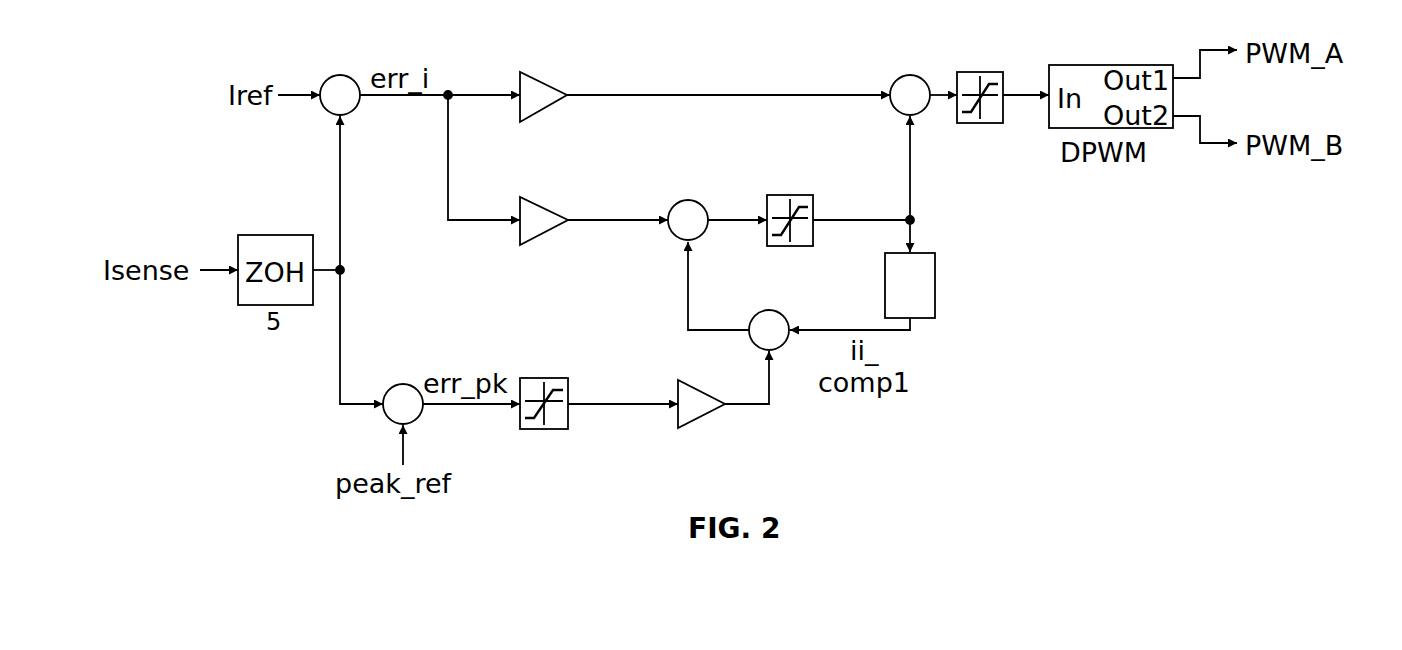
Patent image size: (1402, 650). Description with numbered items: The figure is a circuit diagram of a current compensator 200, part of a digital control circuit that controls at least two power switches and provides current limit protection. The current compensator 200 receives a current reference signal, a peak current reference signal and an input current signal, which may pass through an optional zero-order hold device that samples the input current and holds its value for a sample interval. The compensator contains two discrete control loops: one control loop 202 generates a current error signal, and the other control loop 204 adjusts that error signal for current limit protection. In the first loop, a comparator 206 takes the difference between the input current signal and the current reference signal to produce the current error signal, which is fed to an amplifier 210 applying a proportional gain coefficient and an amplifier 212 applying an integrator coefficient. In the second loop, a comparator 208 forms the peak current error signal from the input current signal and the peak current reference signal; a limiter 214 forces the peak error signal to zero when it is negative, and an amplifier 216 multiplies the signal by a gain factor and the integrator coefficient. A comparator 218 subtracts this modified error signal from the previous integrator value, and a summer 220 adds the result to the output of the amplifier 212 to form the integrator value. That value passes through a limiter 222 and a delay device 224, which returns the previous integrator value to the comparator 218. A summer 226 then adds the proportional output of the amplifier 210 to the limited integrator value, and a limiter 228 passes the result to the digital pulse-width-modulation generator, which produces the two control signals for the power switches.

The current compensator 200 is at (1052, 33).
The control loop 202 is at (610, 153).
The control loop 204 is at (457, 311).
The comparator 206 is at (335, 76).
The comparator 208 is at (405, 385).
The amplifier 210 is at (526, 72).
The amplifier 212 is at (531, 197).
The limiter 214 is at (555, 378).
The amplifier 216 is at (686, 380).
The comparator 218 is at (762, 312).
The summer 220 is at (676, 206).
The limiter 222 is at (813, 226).
The delay device 224 is at (935, 272).
The summer 226 is at (900, 76).
The limiter 228 is at (966, 72).